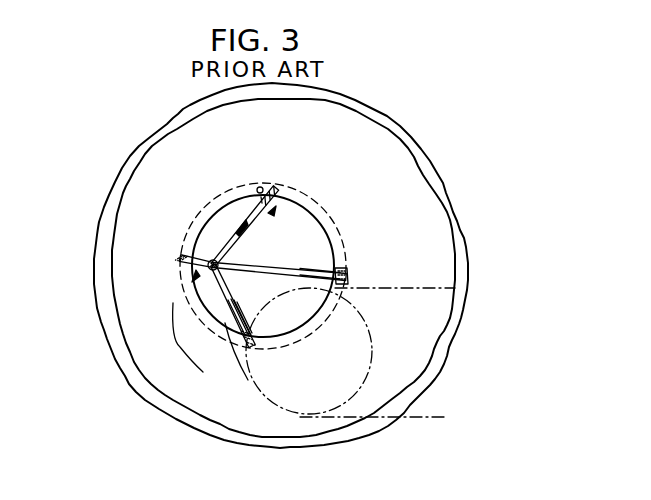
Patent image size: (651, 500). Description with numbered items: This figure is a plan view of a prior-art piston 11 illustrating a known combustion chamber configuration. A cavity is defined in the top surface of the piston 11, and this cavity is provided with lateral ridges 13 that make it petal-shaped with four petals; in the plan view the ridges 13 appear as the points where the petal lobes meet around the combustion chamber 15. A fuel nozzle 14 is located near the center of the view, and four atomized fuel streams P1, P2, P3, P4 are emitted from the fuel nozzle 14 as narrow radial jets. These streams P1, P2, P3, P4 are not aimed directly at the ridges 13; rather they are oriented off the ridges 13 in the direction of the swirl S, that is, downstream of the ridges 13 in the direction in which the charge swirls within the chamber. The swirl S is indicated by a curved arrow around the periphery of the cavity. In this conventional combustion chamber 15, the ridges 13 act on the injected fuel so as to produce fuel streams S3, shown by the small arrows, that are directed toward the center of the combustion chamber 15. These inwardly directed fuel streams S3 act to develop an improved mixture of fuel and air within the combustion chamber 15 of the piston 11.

The piston 11 is at (415, 178).
The lateral ridges 13 is at (259, 187).
The fuel nozzle 14 is at (205, 268).
The combustion chamber 15 is at (283, 254).
The atomized fuel stream P1 is at (203, 261).
The atomized fuel stream P2 is at (226, 226).
The atomized fuel stream P3 is at (318, 260).
The atomized fuel stream P4 is at (222, 345).
The swirl S is at (182, 348).
The fuel streams S3 is at (250, 196).